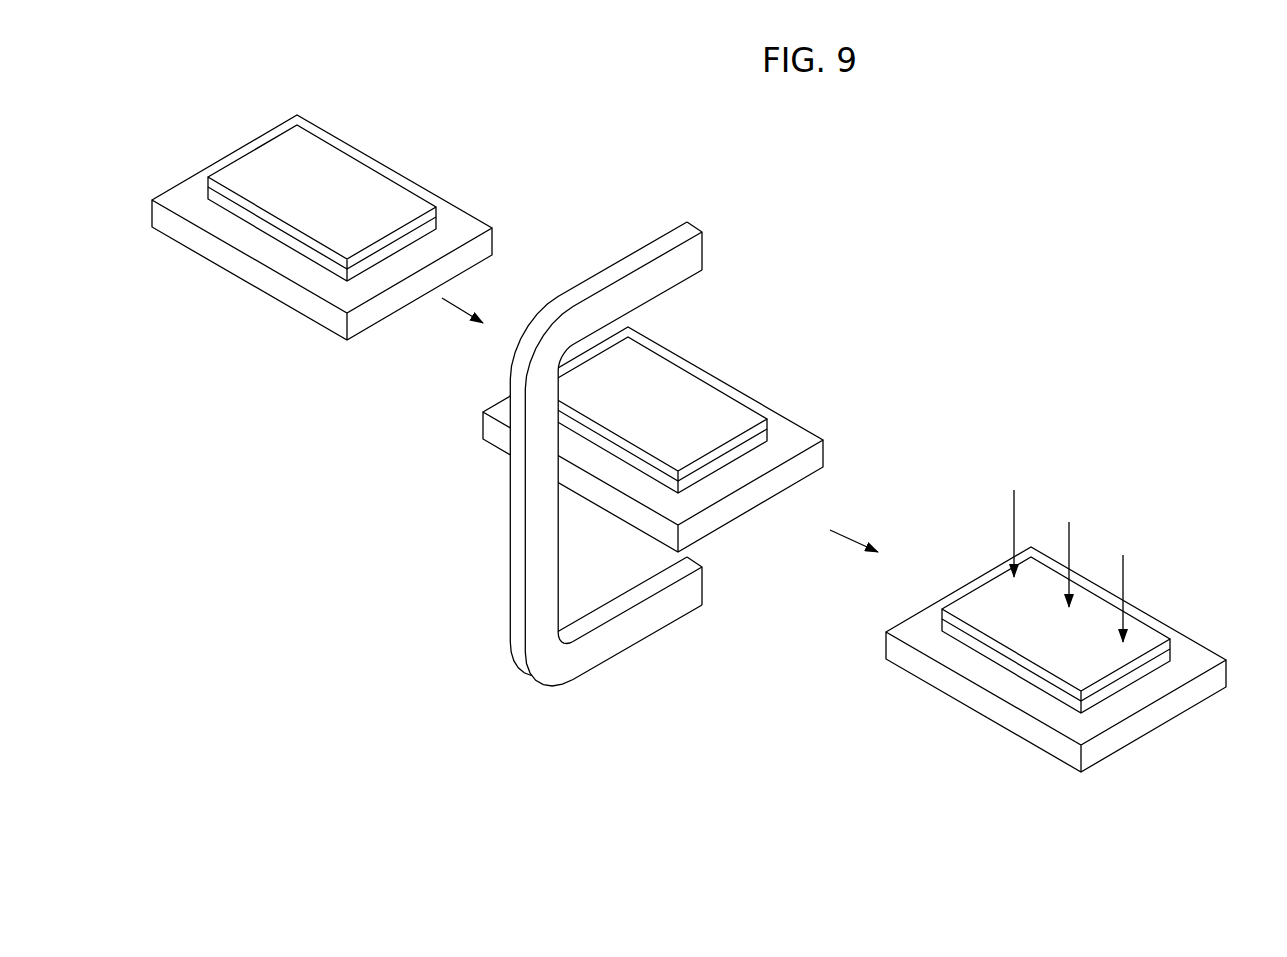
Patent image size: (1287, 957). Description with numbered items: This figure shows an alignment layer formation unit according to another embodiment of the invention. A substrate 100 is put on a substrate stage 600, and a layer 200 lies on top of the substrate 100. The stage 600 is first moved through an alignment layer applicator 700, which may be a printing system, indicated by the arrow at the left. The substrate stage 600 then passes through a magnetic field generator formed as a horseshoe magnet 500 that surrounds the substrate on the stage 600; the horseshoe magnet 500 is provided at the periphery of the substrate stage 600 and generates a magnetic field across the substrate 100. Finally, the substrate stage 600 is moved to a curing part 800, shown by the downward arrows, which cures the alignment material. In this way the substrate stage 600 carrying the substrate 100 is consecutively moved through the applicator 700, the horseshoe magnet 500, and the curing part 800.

The substrate 100 is at (437, 218).
The magnetic layer 200 is at (435, 217).
The horseshoe magnet 500 is at (693, 252).
The substrate stage 600 is at (180, 195).
The alignment layer applicator 700 is at (228, 307).
The curing part 800 is at (963, 733).